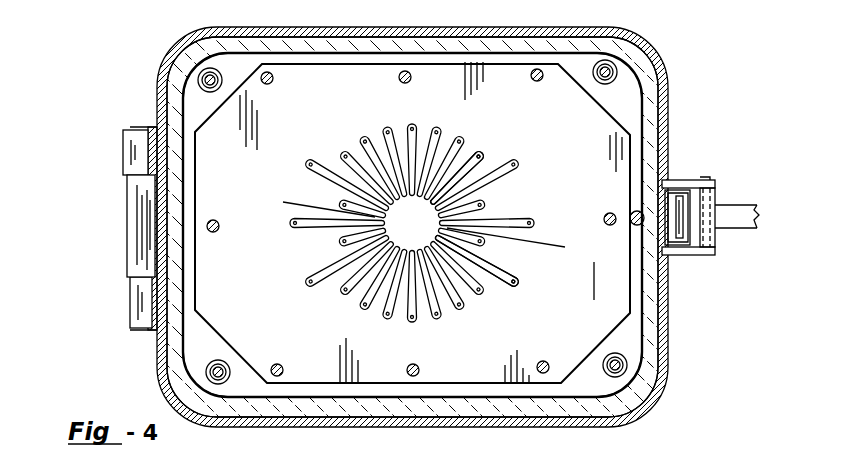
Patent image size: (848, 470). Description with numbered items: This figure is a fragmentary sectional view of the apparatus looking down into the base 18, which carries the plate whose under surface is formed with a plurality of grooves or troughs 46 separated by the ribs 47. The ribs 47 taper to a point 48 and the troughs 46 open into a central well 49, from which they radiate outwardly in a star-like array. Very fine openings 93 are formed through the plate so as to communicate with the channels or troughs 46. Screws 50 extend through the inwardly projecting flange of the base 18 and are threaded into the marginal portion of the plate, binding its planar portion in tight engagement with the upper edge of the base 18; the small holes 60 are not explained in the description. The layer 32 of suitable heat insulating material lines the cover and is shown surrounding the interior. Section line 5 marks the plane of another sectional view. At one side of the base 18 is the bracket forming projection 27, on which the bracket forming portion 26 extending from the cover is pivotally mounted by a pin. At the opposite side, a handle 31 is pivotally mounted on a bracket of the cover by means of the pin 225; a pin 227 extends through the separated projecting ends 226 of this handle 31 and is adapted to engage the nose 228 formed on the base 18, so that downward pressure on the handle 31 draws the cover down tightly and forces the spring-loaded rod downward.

The base 18 is at (661, 106).
The layer of heat insulating material 32 is at (381, 408).
The screws 50 is at (199, 76).
The holes 60 is at (273, 82).
The grooves or troughs 46 is at (484, 183).
The ribs 47 is at (473, 176).
The fine openings 93 is at (515, 288).
The point 48 is at (431, 208).
The well 49 is at (392, 226).
The section line 5- 5 is at (295, 217).
The bracket forming projection 27 is at (128, 152).
The bracket forming portion 26 is at (131, 238).
The separated projecting ends 226 is at (682, 180).
The pin 225 is at (707, 255).
The pin 227 is at (667, 248).
The nose 228 is at (683, 205).
The handle 31 is at (738, 217).